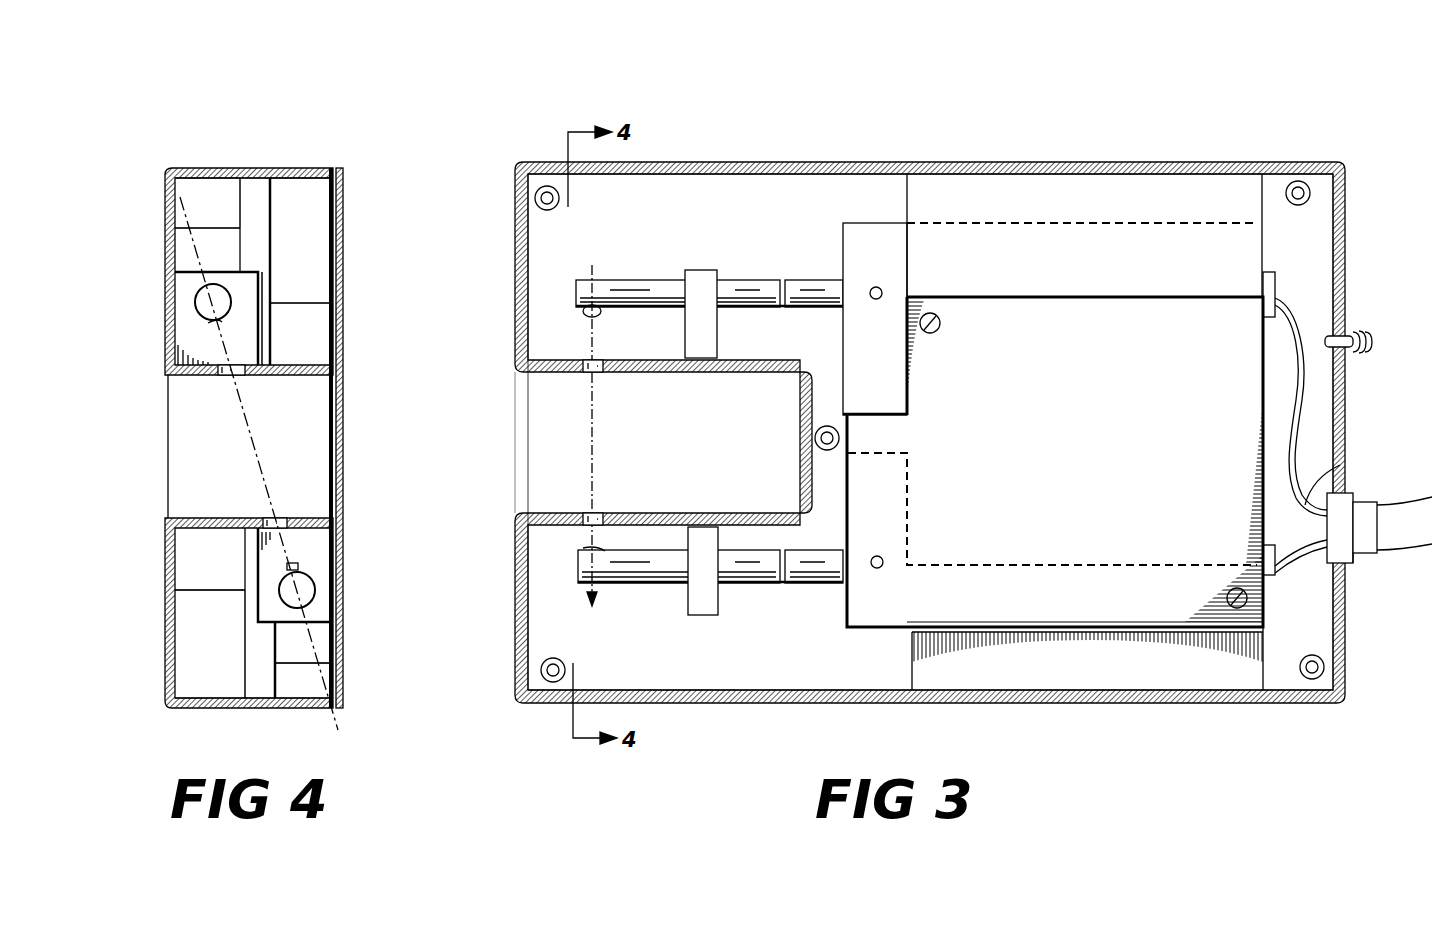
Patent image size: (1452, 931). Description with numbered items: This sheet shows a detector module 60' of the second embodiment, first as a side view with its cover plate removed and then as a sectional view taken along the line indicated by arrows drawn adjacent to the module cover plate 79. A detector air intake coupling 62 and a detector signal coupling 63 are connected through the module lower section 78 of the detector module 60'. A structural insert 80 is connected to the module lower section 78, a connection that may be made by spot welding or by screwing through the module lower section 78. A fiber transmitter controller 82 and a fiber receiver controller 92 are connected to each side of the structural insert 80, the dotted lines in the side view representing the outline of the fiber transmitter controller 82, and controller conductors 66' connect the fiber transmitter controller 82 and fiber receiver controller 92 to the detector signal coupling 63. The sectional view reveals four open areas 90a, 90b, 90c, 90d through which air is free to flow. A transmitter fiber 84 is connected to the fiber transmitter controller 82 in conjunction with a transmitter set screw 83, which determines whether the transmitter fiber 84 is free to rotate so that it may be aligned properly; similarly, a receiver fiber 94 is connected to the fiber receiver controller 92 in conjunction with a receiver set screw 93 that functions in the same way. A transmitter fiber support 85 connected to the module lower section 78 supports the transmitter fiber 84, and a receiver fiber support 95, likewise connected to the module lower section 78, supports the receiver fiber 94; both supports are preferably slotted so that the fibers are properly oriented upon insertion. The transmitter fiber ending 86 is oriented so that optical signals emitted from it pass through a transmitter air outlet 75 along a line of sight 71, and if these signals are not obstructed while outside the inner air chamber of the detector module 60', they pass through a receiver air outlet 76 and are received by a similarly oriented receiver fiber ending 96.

In FIG. 3, the detector module 60' is at (1036, 91).
In FIG. 3, the detector air intake coupling 62 is at (1355, 356).
In FIG. 3, the detector signal coupling 63 is at (1366, 553).
In FIG. 3, the controller conductors 66' is at (1379, 504).
In FIG. 3, the line of sight 71 is at (590, 434).
In FIG. 4, the line of sight 71 is at (245, 425).
In FIG. 3, the transmitter air outlet 75 is at (590, 373).
In FIG. 4, the transmitter air outlet 75 is at (228, 375).
In FIG. 3, the receiver air outlet 76 is at (605, 515).
In FIG. 4, the receiver air outlet 76 is at (283, 518).
In FIG. 3, the module lower section 78 is at (1287, 160).
In FIG. 4, the module lower section 78 is at (288, 170).
In FIG. 4, the module cover plate 79 is at (340, 190).
In FIG. 3, the structural insert 80 is at (1098, 165).
In FIG. 4, the structural insert 80 is at (255, 185).
In FIG. 3, the fiber transmitter controller 82 is at (872, 230).
In FIG. 4, the fiber transmitter controller 82 is at (180, 243).
In FIG. 3, the transmitter set screw 83 is at (869, 292).
In FIG. 3, the transmitter fiber 84 is at (745, 280).
In FIG. 4, the transmitter fiber 84 is at (196, 305).
In FIG. 3, the transmitter fiber support 85 is at (700, 272).
In FIG. 4, the transmitter fiber support 85 is at (258, 292).
In FIG. 3, the transmitter fiber ending 86 is at (584, 312).
In FIG. 4, the transmitter fiber ending 86 is at (215, 323).
In FIG. 4, the open area 90a is at (322, 183).
In FIG. 4, the open area 90b is at (207, 183).
In FIG. 4, the open area 90c is at (200, 655).
In FIG. 4, the open area 90d is at (300, 690).
In FIG. 3, the fiber receiver controller 92 is at (1050, 612).
In FIG. 4, the fiber receiver controller 92 is at (325, 300).
In FIG. 3, the receiver set screw 93 is at (875, 569).
In FIG. 3, the receiver fiber 94 is at (767, 584).
In FIG. 4, the receiver fiber 94 is at (307, 583).
In FIG. 3, the receiver fiber support 95 is at (700, 601).
In FIG. 3, the receiver fiber ending 96 is at (598, 549).
In FIG. 4, the receiver fiber ending 96 is at (299, 567).